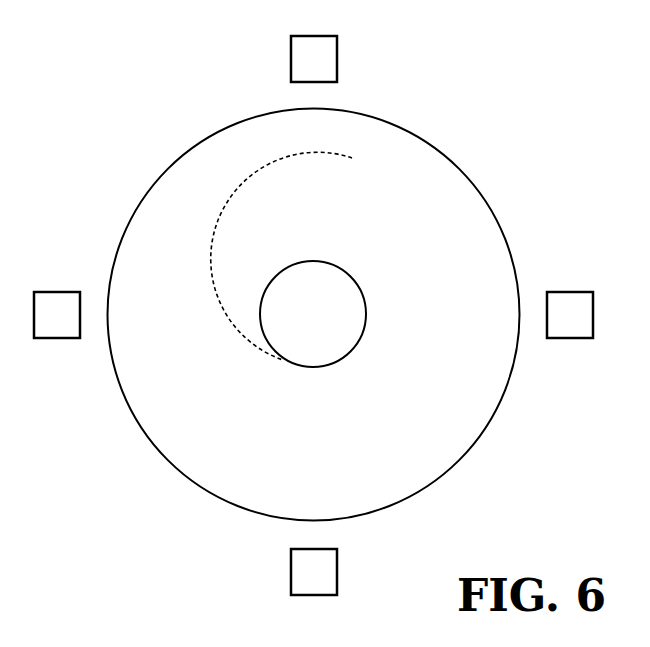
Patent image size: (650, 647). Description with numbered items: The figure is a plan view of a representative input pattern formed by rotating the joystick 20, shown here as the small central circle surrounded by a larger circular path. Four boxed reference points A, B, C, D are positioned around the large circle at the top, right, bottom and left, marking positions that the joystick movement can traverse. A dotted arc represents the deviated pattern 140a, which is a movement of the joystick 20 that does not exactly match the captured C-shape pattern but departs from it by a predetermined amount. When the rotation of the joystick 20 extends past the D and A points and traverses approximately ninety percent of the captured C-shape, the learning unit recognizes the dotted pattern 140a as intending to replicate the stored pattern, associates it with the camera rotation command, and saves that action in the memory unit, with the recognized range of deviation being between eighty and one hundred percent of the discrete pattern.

The joystick 20 is at (350, 315).
The deviated C-shape pattern 140a is at (327, 150).
The point A is at (314, 59).
The point B is at (570, 315).
The point C is at (314, 572).
The point D is at (57, 315).